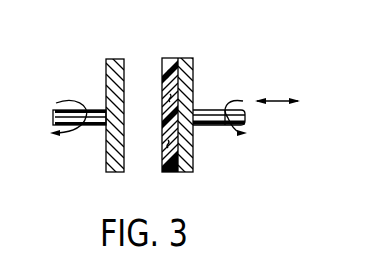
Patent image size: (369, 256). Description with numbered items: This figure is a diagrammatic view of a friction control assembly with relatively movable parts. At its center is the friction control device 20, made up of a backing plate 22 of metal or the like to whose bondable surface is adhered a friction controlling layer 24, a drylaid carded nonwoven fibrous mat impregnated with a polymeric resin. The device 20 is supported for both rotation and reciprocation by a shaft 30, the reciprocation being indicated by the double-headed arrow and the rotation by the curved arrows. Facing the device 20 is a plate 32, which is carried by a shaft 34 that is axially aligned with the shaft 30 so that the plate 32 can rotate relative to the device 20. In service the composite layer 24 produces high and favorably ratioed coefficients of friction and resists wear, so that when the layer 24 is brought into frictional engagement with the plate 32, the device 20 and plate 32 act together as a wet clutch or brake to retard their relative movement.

The friction control device 20 is at (197, 49).
The backing plate 22 is at (184, 166).
The friction controlling layer 24 is at (158, 61).
The shaft 30 is at (211, 118).
The plate 32 is at (83, 200).
The shaft 34 is at (88, 115).